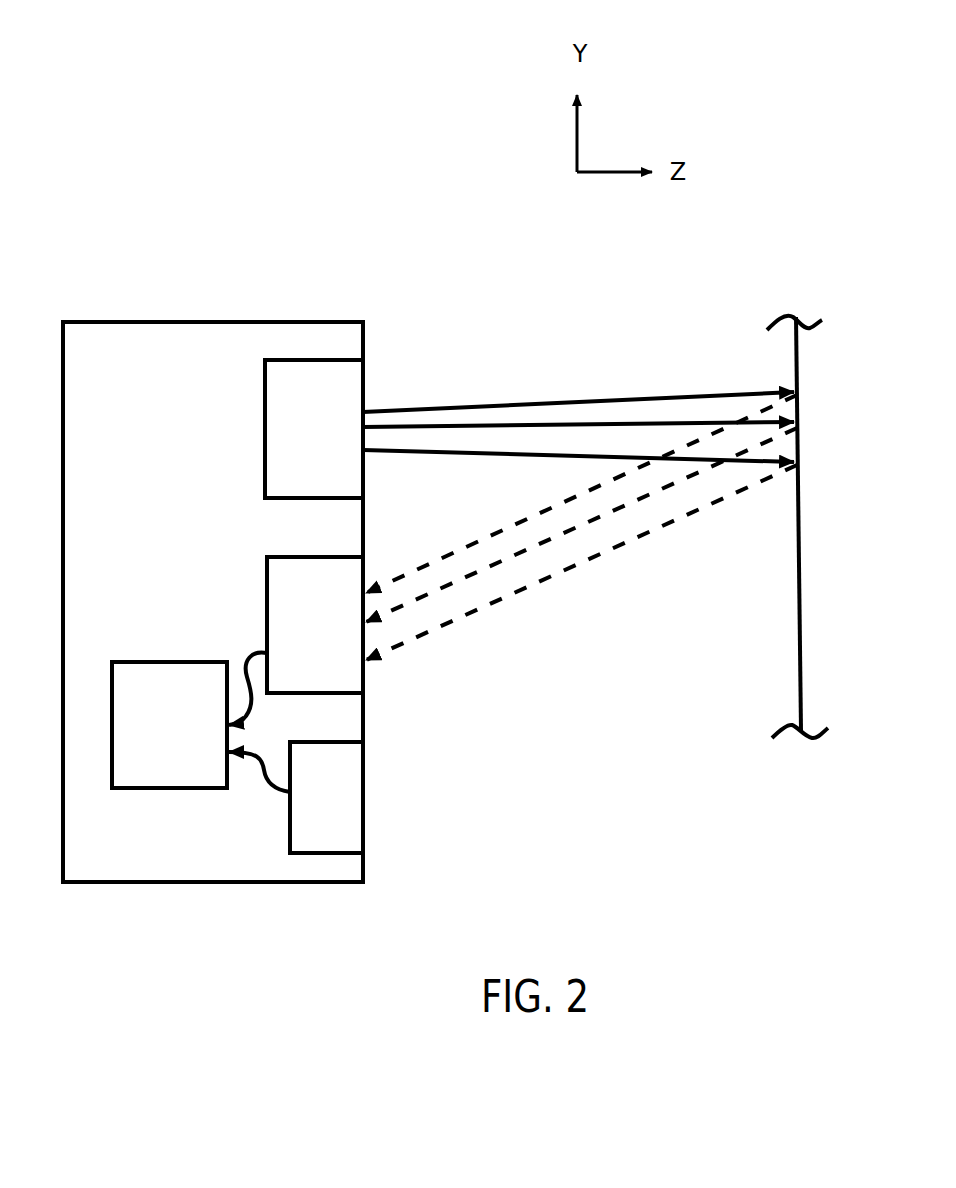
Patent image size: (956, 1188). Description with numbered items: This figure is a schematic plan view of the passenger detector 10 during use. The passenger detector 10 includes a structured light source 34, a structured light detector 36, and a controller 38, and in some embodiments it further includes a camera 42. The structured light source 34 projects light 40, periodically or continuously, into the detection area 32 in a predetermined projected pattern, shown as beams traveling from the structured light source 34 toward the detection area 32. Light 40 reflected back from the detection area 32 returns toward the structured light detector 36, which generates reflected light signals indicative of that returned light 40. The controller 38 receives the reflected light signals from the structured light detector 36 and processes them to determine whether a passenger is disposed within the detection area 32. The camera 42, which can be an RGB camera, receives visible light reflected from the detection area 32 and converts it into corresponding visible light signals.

The passenger detector 10 is at (158, 300).
The detection area 32 is at (800, 637).
The structured light source 34 is at (314, 429).
The structured light detector 36 is at (315, 625).
The controller 38 is at (169, 725).
The light 40 is at (423, 410).
The camera 42 is at (326, 797).